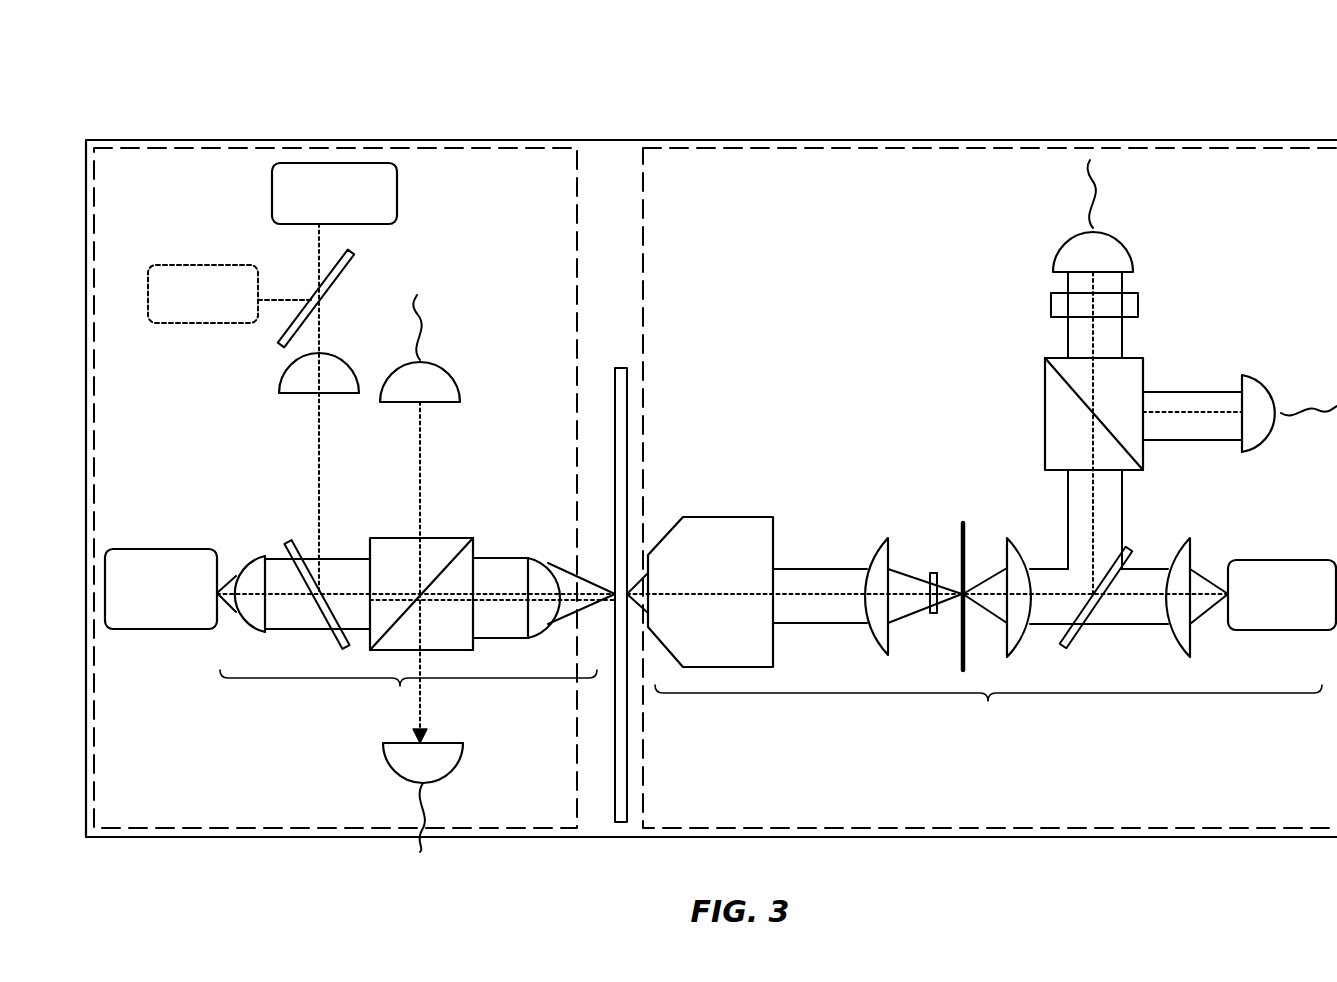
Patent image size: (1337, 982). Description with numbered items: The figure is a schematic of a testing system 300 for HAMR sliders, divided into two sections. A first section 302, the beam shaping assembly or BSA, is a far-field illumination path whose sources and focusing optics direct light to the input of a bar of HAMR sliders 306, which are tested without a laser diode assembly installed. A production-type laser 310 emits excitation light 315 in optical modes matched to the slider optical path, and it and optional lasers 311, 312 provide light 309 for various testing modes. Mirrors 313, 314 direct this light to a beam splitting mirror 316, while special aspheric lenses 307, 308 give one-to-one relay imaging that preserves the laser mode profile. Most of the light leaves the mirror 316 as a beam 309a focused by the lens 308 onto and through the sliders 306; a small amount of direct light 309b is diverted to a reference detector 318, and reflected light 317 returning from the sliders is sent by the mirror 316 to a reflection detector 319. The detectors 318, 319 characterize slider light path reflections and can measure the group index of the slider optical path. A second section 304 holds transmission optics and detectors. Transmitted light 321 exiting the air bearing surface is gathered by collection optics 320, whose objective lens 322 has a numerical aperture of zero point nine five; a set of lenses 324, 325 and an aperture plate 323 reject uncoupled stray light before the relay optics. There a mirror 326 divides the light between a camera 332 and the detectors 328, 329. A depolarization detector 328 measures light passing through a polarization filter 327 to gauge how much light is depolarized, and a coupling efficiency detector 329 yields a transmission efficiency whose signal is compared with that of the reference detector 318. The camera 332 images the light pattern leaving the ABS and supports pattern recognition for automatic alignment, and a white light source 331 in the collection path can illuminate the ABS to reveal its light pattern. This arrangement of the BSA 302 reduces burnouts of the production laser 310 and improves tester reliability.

The testing system 300 is at (514, 78).
The first section 302 is at (390, 148).
The second section 304 is at (690, 148).
The bar of HAMR sliders 306 is at (298, 394).
The aspheric lens 307 is at (254, 557).
The aspheric lens 308 is at (545, 563).
The light 309 is at (346, 590).
The beam 309a is at (498, 590).
The direct light 309b is at (420, 484).
The production-type laser 310 is at (272, 181).
The optional laser 311 is at (201, 265).
The optional laser 312 is at (163, 549).
The mirror 313 is at (337, 282).
The mirror 314 is at (290, 540).
The excitation light 315 is at (317, 254).
The beam splitting mirror 316 is at (450, 538).
The reflected light 317 is at (424, 698).
The reference detector 318 is at (450, 367).
The reflection detector 319 is at (463, 750).
The collection optics 320 is at (988, 718).
The transmitted light 321 is at (787, 592).
The objective lens 322 is at (733, 517).
The aperture plate 323 is at (963, 535).
The lens 324 is at (884, 538).
The lens 325 is at (1012, 538).
The mirror 326 is at (1078, 640).
The polarization filter 327 is at (1138, 307).
The depolarization detector 328 is at (1125, 247).
The coupling efficiency (CE) detector 329 is at (1246, 375).
The white light source 331 is at (933, 573).
The camera 332 is at (1262, 560).